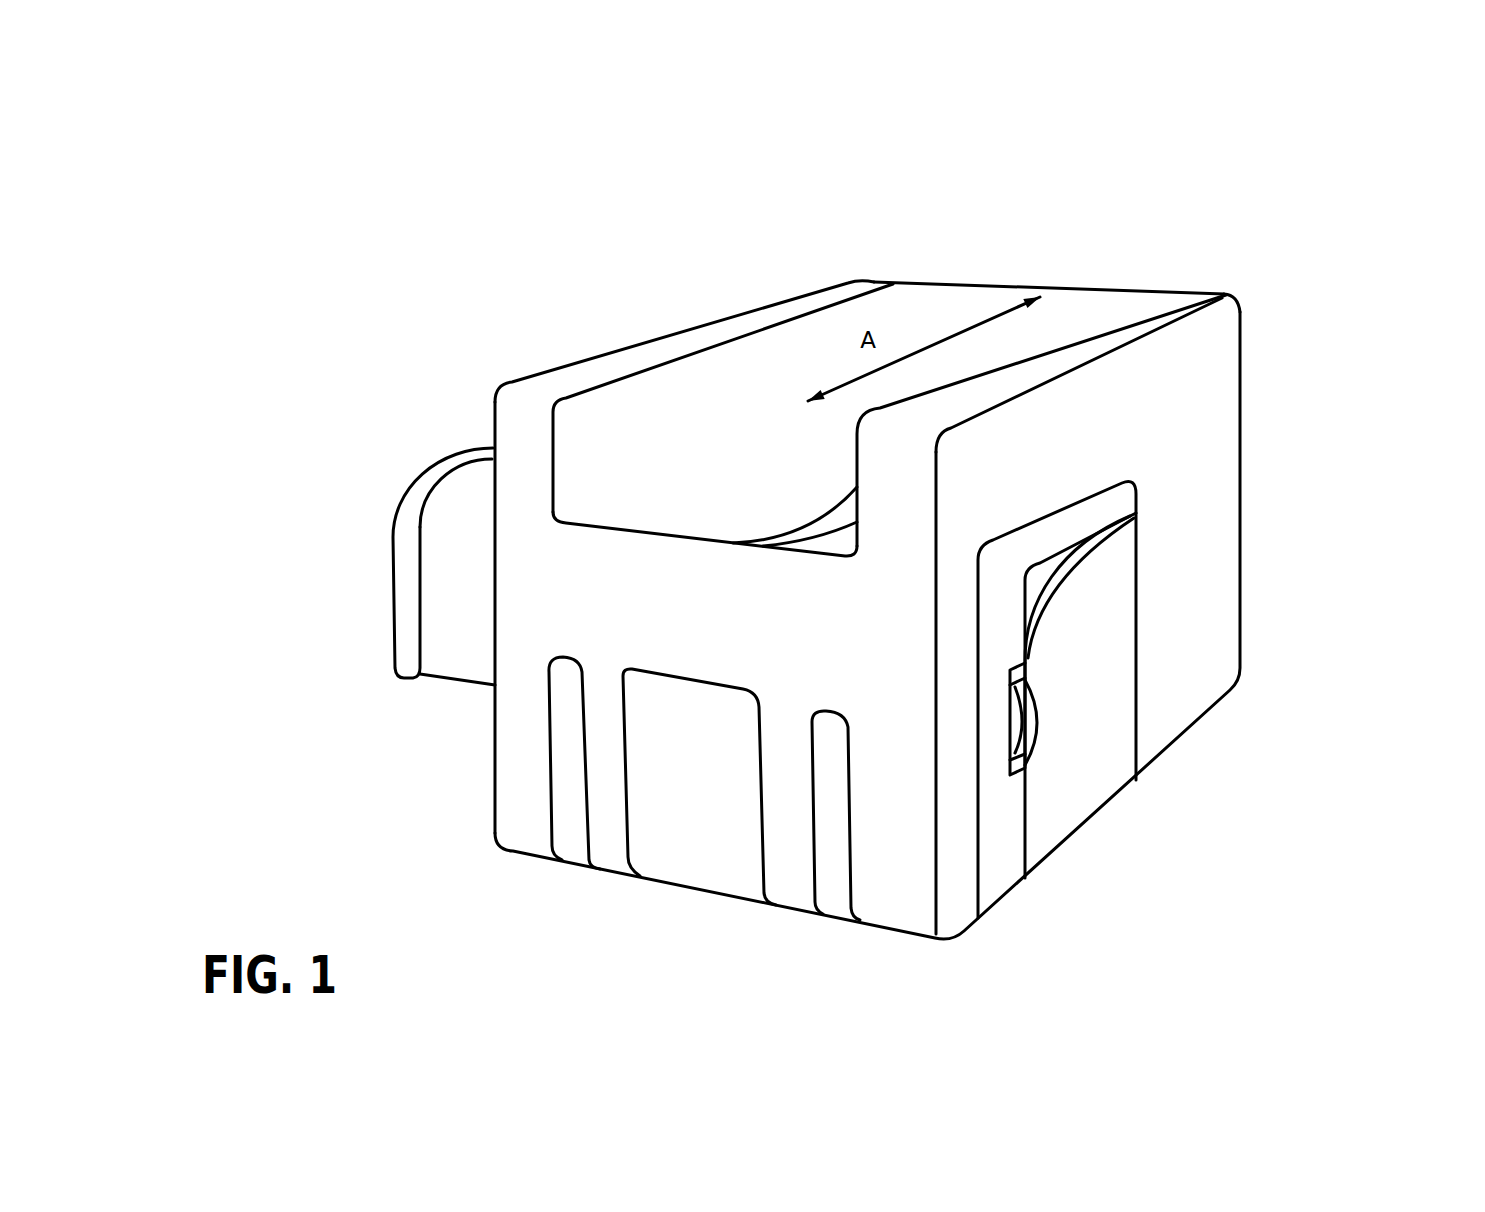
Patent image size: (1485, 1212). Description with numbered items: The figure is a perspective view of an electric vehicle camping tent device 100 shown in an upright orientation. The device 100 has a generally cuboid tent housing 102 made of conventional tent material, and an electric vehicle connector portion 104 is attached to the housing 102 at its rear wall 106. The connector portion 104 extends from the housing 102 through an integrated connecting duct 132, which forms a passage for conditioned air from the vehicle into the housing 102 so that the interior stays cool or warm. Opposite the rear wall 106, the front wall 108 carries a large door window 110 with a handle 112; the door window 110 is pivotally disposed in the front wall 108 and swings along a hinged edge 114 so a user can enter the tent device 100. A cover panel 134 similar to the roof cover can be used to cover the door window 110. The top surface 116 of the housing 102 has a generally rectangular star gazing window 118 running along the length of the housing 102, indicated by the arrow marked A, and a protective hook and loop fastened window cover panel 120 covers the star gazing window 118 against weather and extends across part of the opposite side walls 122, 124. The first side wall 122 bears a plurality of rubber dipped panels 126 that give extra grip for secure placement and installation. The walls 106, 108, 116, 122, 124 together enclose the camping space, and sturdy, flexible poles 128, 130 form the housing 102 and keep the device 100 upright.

The electric vehicle camping tent device 100 is at (256, 204).
The tent housing 102 is at (1292, 332).
The electric vehicle connector portion 104 is at (376, 608).
The rear wall 106 is at (497, 411).
The front wall 108 is at (1187, 413).
The large door window 110 is at (998, 840).
The handle 112 is at (1025, 725).
The hinged edge 114 is at (1137, 632).
The top surface 116 is at (1138, 323).
The star gazing window 118 is at (823, 549).
The hook and loop fastened window cover panel 120 is at (928, 310).
The first side wall 122 is at (607, 629).
The second side wall 124 is at (1256, 304).
The rubber dipped panels 126 is at (712, 858).
The pole 128 is at (992, 407).
The pole 130 is at (604, 363).
The integrated connecting duct 132 is at (467, 544).
The cover panel 134 is at (1043, 598).